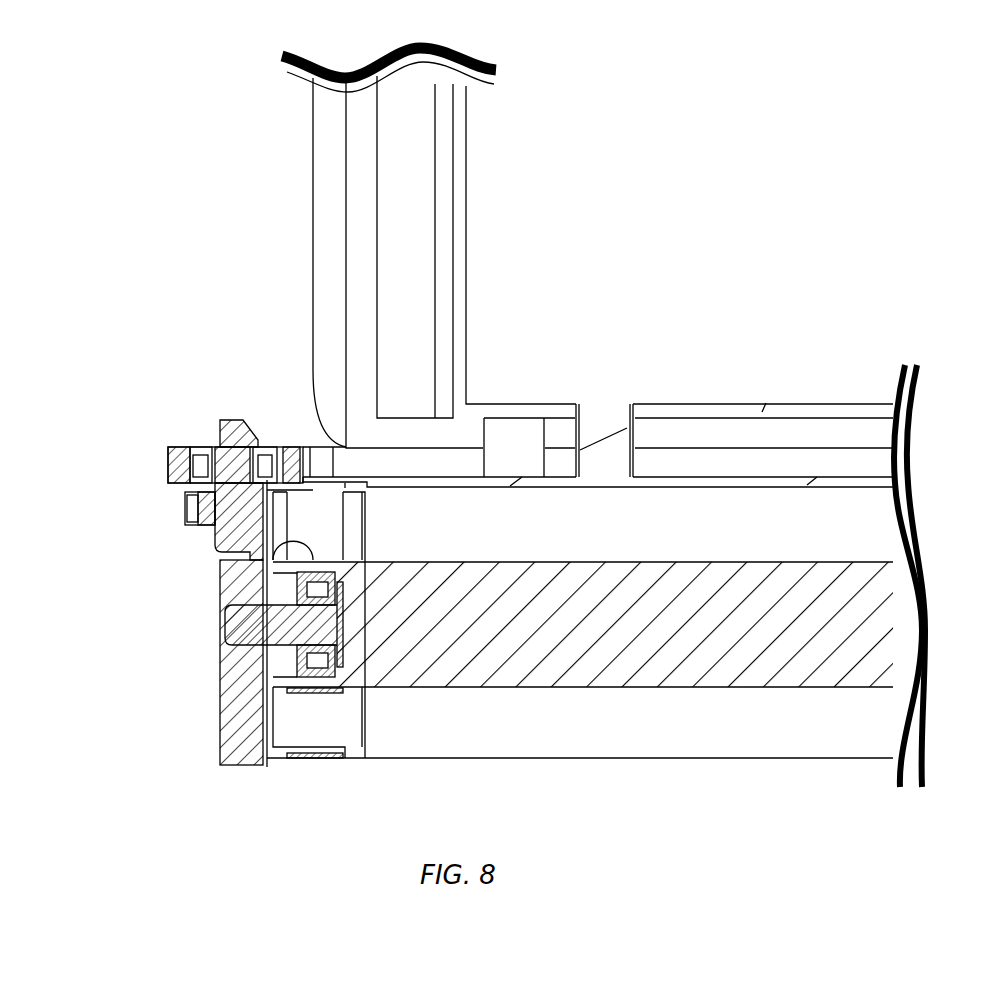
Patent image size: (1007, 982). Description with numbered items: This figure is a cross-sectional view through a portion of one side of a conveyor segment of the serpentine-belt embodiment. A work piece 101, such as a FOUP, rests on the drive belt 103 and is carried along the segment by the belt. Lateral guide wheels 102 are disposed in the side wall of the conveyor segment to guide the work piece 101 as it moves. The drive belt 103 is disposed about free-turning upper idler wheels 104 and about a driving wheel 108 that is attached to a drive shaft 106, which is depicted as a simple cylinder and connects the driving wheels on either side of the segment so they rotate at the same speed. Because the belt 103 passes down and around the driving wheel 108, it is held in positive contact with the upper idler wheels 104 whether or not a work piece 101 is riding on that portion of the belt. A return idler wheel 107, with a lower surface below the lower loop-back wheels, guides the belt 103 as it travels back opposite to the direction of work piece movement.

The work piece 101 is at (313, 207).
The lateral guide wheels 102 is at (168, 448).
The drive belt 103 is at (312, 495).
The upper idler wheels 104 is at (277, 500).
The drive shaft 106 is at (288, 540).
The return idler wheel 107 is at (298, 717).
The driving wheel 108 is at (282, 680).